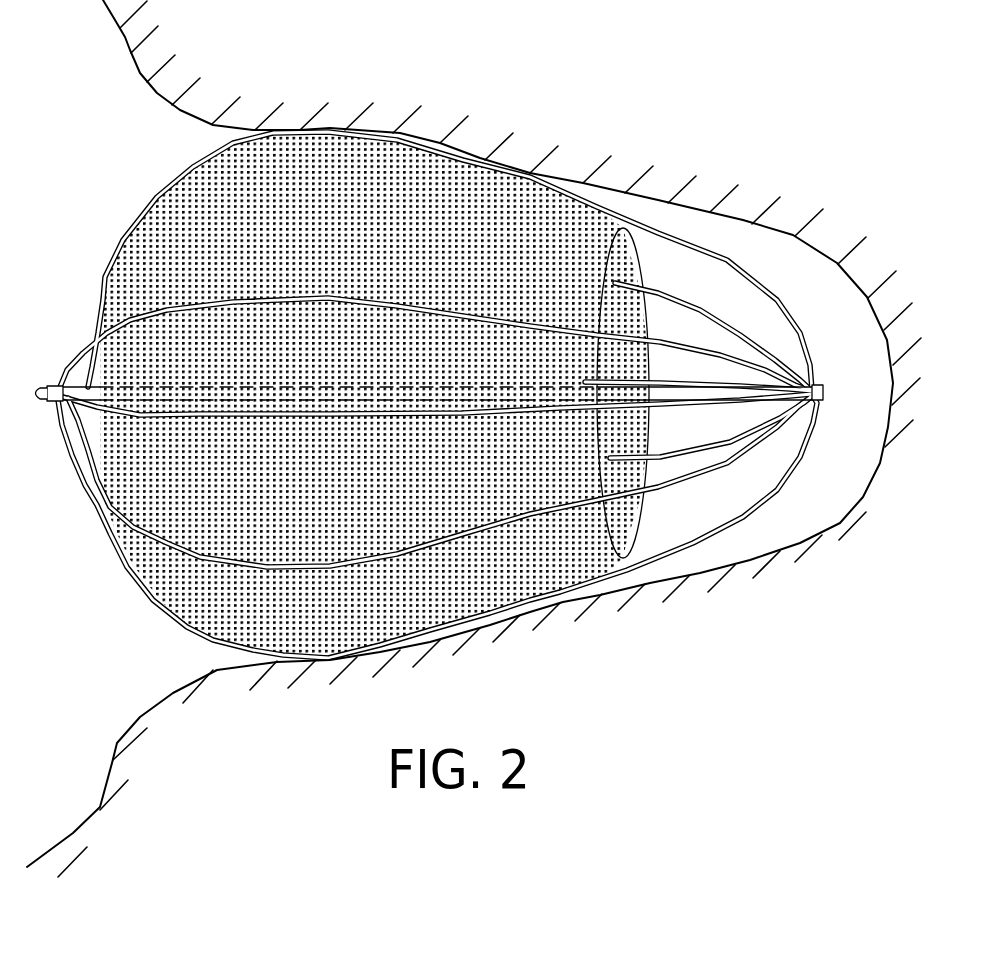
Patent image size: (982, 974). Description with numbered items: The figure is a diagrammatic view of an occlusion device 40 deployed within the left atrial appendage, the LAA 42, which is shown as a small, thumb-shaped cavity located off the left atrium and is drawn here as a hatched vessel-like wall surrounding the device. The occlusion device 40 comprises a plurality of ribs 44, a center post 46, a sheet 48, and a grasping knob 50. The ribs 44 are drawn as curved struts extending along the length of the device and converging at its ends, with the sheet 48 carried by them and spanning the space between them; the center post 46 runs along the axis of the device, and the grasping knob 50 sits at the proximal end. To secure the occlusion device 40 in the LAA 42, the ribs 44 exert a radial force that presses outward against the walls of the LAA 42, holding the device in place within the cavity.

The occlusion device 40 is at (106, 181).
The LAA 42 is at (856, 452).
The ribs 44 is at (553, 585).
The center post 46 is at (692, 390).
The sheet 48 is at (360, 624).
The grasping knob 50 is at (40, 402).